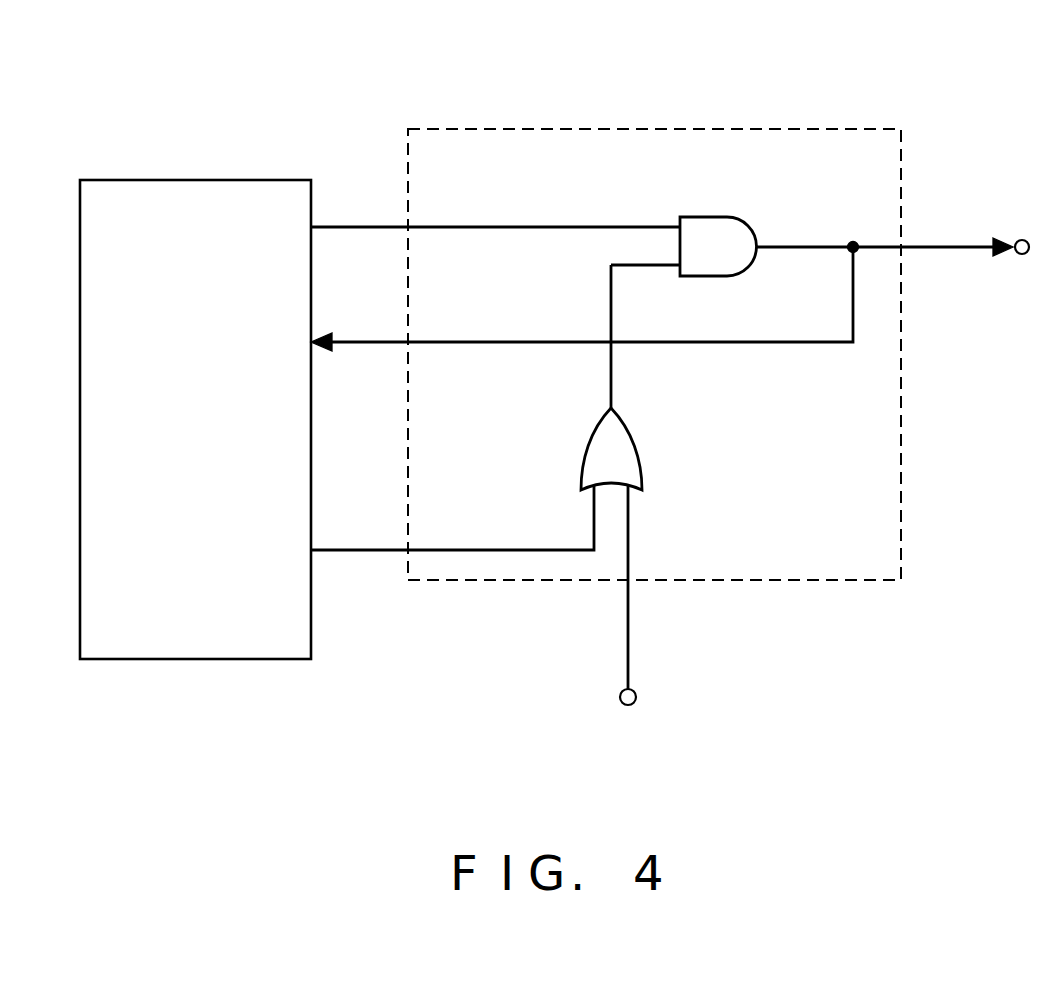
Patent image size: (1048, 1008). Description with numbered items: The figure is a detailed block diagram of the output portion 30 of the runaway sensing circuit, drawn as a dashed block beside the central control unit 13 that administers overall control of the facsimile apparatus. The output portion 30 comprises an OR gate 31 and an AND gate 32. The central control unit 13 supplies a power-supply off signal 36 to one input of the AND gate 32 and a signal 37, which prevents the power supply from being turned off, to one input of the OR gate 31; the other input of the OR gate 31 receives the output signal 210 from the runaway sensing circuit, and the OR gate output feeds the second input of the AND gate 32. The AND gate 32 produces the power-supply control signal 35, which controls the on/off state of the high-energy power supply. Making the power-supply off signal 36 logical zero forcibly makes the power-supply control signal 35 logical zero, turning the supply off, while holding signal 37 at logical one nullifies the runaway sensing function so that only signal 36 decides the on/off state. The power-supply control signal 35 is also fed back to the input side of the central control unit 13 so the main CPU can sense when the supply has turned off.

The central control unit 13 is at (257, 179).
The output portion of the runaway sensing circuit 30 is at (650, 129).
The OR gate 31 is at (643, 456).
The AND gate 32 is at (718, 217).
The power-supply control signal 35 is at (974, 251).
The power-supply off signal 36 is at (491, 227).
The power-supply off prevention signal 37 is at (503, 550).
The output signal of the runaway sensing circuit 210 is at (628, 664).